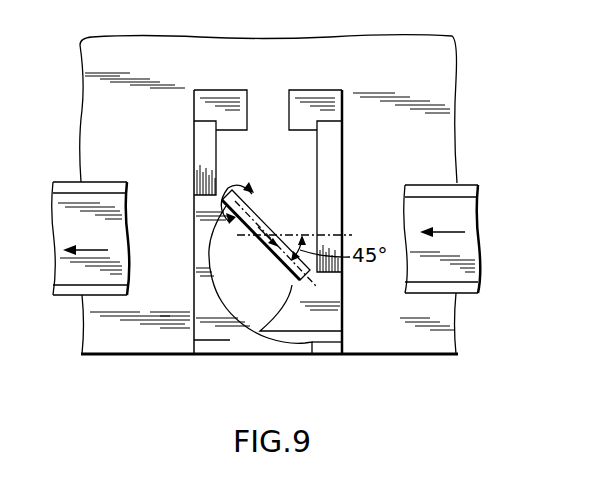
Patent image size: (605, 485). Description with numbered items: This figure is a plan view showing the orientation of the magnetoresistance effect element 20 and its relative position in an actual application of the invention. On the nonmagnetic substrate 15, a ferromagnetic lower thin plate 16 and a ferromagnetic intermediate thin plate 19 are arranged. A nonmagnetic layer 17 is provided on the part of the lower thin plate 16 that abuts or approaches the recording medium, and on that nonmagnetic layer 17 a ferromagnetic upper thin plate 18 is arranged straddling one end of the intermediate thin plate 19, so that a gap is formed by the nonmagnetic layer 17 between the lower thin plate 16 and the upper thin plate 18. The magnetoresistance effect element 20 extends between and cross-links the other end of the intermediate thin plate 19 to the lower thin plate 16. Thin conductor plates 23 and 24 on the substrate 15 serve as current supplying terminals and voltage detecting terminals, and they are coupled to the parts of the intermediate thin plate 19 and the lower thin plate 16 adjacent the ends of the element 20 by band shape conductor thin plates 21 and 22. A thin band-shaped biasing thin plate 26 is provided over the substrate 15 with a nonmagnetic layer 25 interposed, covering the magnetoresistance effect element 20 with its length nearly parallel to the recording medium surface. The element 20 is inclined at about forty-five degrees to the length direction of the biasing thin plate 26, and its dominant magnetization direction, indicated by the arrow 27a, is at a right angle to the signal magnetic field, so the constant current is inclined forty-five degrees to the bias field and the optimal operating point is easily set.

The nonmagnetic substrate 15 is at (445, 88).
The lower thin plate 16 is at (323, 310).
The nonmagnetic layer 17 is at (332, 343).
The upper thin plate 18 is at (207, 332).
The intermediate thin plate 19 is at (203, 215).
The magnetoresistance effect element 20 is at (246, 189).
The band shape conductor thin plate 21 is at (200, 135).
The band shape conductor thin plate 22 is at (330, 149).
The thin conductor plate 23 is at (237, 95).
The thin conductor plate 24 is at (333, 97).
The nonmagnetic layer 25 is at (470, 192).
The biasing thin plate 26 is at (470, 246).
The arrow 27a is at (255, 193).